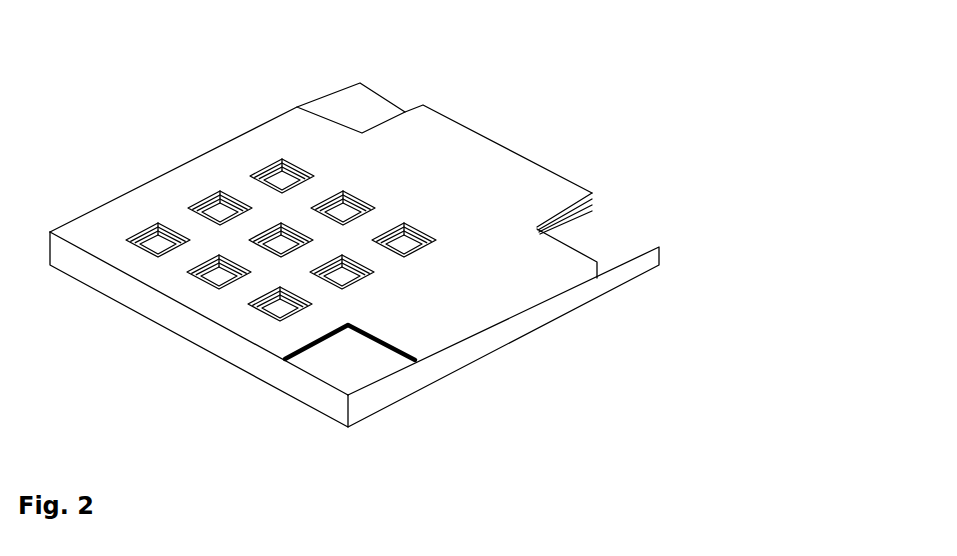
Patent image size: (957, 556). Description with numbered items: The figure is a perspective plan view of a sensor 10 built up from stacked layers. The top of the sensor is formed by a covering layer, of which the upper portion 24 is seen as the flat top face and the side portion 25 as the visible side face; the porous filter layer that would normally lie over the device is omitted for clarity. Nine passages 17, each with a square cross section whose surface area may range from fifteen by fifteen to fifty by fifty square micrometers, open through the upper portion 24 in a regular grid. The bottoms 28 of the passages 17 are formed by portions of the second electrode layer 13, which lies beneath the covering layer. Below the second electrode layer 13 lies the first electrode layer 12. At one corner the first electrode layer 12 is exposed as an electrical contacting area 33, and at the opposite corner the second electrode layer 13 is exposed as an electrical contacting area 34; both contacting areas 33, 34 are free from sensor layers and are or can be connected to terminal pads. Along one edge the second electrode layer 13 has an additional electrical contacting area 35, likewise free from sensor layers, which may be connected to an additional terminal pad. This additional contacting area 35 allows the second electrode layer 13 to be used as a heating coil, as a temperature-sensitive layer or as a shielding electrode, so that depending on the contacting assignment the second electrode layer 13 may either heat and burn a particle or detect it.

The sensor 10 is at (534, 116).
The first electrode layer 12 is at (338, 380).
The second electrode layer 13 is at (347, 103).
The passage 17 is at (266, 151).
The upper portion 24 is at (447, 205).
The side portion 25 is at (515, 333).
The bottom 28 is at (220, 210).
The electrical contacting area 33 is at (360, 370).
The electrical contacting area 34 is at (367, 98).
The additional electrical contacting area 35 is at (603, 227).